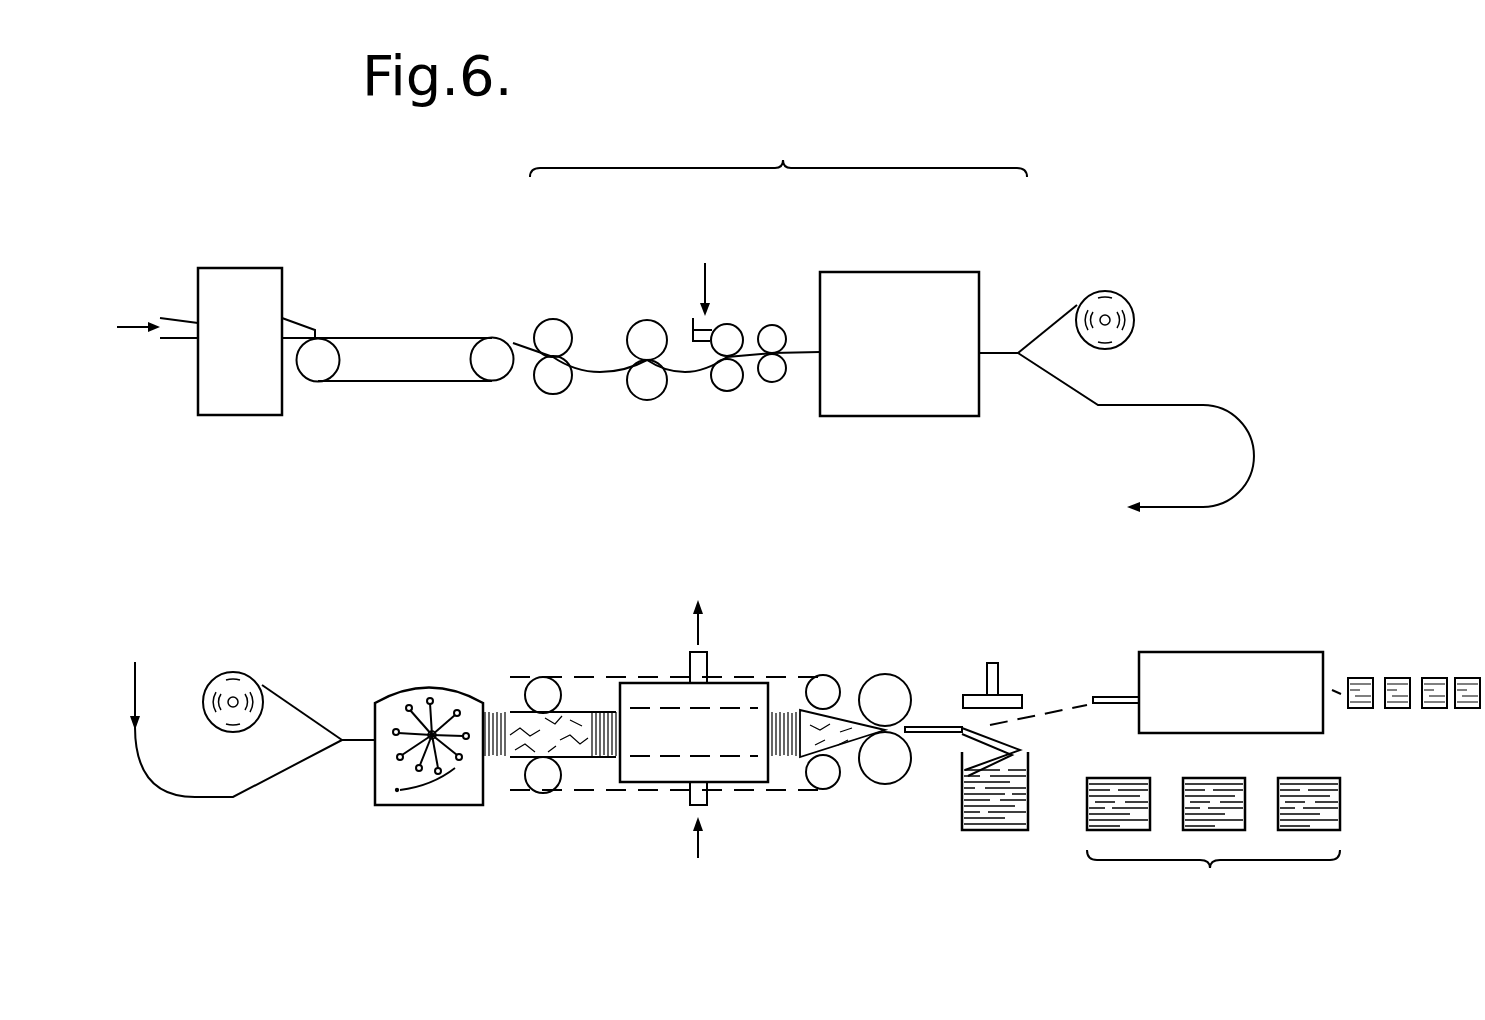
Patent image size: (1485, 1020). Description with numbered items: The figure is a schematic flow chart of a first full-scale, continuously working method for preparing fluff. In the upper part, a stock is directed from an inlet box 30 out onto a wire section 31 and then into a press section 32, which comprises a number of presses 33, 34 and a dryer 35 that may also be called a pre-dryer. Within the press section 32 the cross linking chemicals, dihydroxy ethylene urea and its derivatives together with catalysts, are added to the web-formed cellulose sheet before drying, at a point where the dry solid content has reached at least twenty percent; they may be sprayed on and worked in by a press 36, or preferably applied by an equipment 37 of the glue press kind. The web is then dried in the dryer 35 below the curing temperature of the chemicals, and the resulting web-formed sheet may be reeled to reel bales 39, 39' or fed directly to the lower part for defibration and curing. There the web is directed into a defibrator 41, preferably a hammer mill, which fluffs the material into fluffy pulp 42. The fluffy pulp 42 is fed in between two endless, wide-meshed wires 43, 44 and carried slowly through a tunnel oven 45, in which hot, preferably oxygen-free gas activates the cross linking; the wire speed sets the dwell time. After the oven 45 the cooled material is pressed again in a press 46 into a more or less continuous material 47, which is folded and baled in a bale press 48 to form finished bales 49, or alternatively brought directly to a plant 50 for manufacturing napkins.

The inlet box 30 is at (240, 278).
The wire section 31 is at (357, 336).
The press section 32 is at (770, 261).
The press 33 is at (556, 322).
The press 34 is at (644, 325).
The dryer 35 is at (898, 280).
The press 36 is at (778, 330).
The equipment 37 is at (726, 332).
The reel bales 39 is at (1146, 320).
The reel 39' is at (272, 676).
The defibrator 41 is at (423, 690).
The fluffy pulp 42 is at (513, 724).
The wire 43 is at (651, 645).
The wire 44 is at (594, 792).
The tunnel oven 45 is at (736, 688).
The press 46 is at (886, 680).
The continuous material 47 is at (930, 724).
The bale press 48 is at (972, 820).
The finished bales 49 is at (1213, 843).
The plant for the manufacturing of napkins 50 is at (1250, 660).